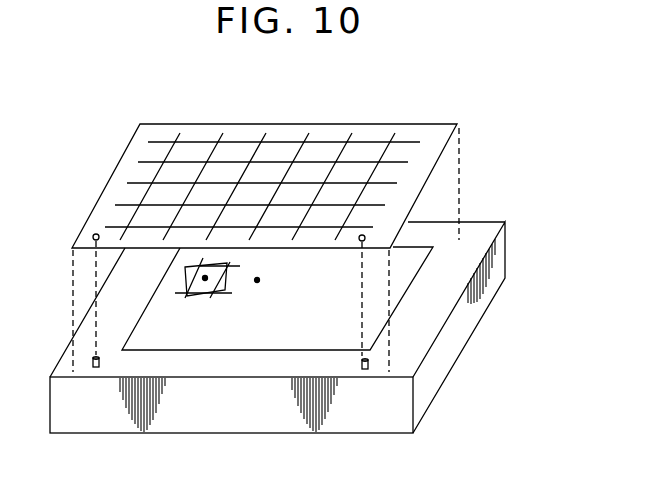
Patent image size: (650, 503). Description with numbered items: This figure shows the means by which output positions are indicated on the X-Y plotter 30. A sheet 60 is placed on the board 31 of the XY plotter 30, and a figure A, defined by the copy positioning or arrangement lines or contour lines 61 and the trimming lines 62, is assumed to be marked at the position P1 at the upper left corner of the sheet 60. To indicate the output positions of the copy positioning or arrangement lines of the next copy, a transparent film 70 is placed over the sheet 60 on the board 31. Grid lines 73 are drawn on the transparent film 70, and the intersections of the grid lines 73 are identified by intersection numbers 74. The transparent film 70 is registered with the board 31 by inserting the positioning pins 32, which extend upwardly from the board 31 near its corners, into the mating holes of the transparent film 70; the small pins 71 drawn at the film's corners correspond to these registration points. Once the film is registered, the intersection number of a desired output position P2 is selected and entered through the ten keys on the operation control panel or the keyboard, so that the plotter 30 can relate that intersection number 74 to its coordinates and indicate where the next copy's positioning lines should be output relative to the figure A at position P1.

The X-Y plotter 30 is at (561, 371).
The board 31 is at (452, 352).
The positioning pins 32 is at (91, 363).
The sheet 60 is at (410, 267).
The copy positioning or arrangement lines 61 is at (227, 283).
The trimming lines 62 is at (209, 299).
The transparent film 70 is at (437, 135).
The locating pins 71 is at (93, 234).
The grid lines 73 is at (190, 133).
The intersection numbers 74 is at (170, 140).
The figure A is at (169, 297).
The position P1 is at (196, 299).
The desired output position P2 is at (262, 303).